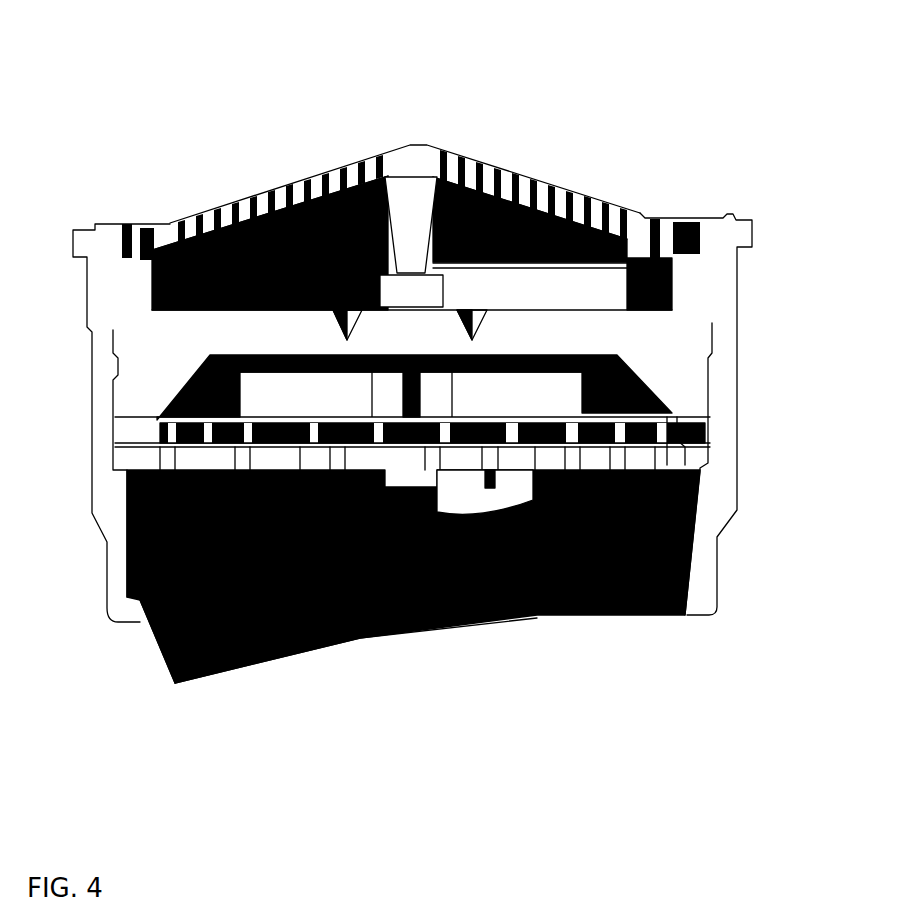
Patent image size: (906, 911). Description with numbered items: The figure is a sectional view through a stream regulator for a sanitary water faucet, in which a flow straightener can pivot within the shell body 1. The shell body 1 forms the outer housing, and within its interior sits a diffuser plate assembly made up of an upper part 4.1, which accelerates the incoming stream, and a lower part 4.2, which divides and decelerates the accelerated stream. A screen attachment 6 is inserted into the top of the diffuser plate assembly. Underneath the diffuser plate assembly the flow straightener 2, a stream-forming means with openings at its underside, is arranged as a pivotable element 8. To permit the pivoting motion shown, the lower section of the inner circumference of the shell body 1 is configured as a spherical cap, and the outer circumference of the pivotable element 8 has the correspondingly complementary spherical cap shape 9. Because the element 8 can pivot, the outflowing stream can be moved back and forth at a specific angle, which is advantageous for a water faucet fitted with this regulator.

The shell body 1 is at (107, 510).
The flow straightener 2 is at (533, 617).
The upper part 4.1 is at (700, 285).
The lower part 4.2 is at (688, 437).
The screen attachment 6 is at (465, 162).
The pivotable element 8 is at (328, 645).
The spherical cap shape 9 is at (150, 643).